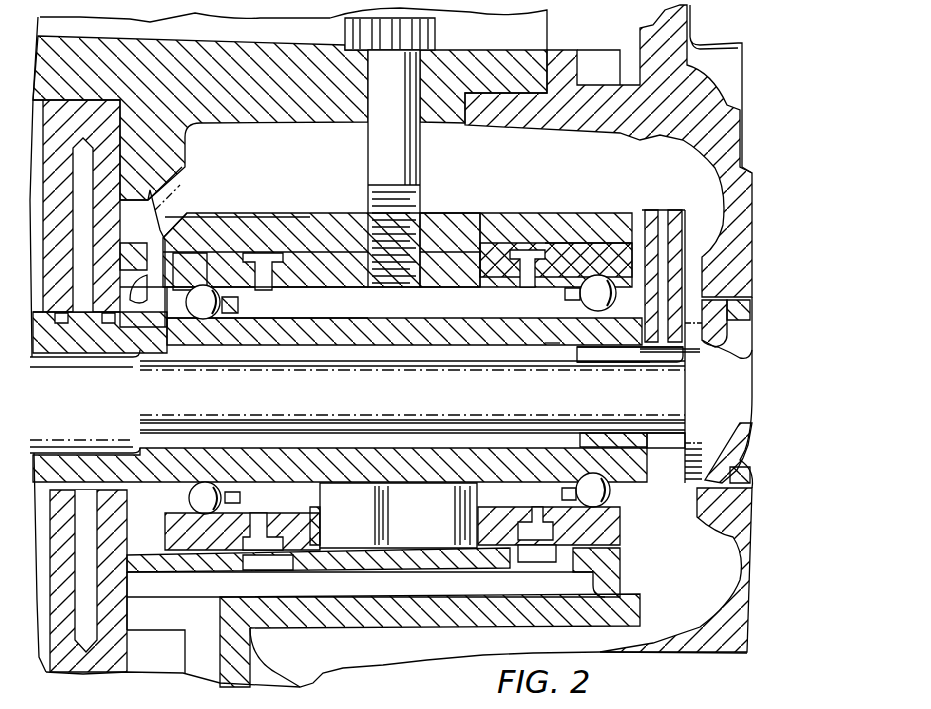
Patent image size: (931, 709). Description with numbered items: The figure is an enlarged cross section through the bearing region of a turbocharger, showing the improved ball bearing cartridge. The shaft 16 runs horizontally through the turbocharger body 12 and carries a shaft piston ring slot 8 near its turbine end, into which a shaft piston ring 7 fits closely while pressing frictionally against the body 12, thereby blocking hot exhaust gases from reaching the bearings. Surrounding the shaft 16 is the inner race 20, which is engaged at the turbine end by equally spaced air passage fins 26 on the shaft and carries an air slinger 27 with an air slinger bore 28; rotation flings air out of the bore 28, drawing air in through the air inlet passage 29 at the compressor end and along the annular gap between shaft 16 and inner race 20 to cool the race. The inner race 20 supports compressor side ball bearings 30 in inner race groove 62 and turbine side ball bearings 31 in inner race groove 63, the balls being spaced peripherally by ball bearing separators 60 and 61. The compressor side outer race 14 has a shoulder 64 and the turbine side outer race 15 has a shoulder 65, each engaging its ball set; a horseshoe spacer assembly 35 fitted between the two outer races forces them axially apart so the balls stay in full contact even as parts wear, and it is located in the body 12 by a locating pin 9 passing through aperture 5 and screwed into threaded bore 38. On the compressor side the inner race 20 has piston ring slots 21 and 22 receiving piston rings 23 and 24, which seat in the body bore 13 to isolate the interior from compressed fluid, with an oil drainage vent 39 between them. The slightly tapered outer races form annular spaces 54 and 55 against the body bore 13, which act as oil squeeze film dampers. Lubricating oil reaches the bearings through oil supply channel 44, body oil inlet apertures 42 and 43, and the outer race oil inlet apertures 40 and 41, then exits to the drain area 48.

The aperture 5 is at (368, 82).
The shaft piston ring 7 is at (697, 487).
The shaft piston ring slot 8 is at (737, 370).
The locating pin 9 is at (438, 30).
The turbocharger body 12 is at (483, 67).
The body bore 13 is at (163, 228).
The compressor side outer race 14 is at (163, 256).
The turbine side outer race 15 is at (497, 233).
The shaft 16 is at (357, 346).
The inner race 20 is at (378, 315).
The piston ring slot 21 is at (63, 356).
The piston ring slot 22 is at (113, 355).
The piston ring 23 is at (92, 355).
The piston ring 24 is at (118, 300).
The air passage fins 26 is at (590, 348).
The air slinger 27 is at (680, 228).
The air slinger bore 28 is at (665, 210).
The air inlet passage 29 is at (160, 340).
The ball bearings 30 is at (228, 213).
The ball bearings 31 is at (545, 344).
The horseshoe spacer assembly 35 is at (458, 233).
The threaded bore 38 is at (380, 280).
The oil drainage vent 39 is at (83, 218).
The outer race oil inlet aperture 40 is at (265, 527).
The oil inlet aperture 41 is at (543, 513).
The body oil inlet aperture 42 is at (280, 565).
The body oil inlet aperture 43 is at (545, 548).
The oil supply channel 44 is at (366, 540).
The drain area 48 is at (396, 588).
The annular space 54 is at (208, 217).
The annular space 55 is at (607, 230).
The ball bearing separator 60 is at (255, 305).
The ball bearing separator 61 is at (565, 293).
The inner race groove 62 is at (238, 306).
The inner race groove 63 is at (630, 354).
The shoulder 64 is at (248, 220).
The shoulder 65 is at (575, 233).